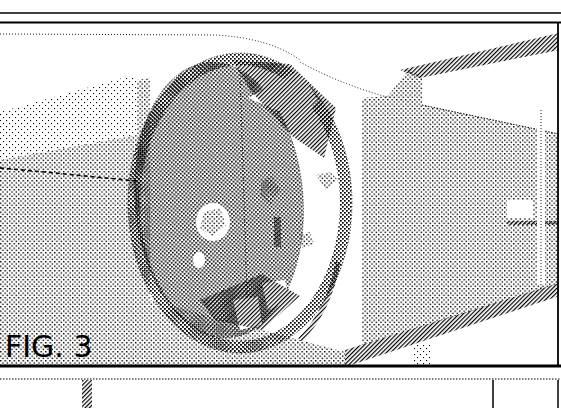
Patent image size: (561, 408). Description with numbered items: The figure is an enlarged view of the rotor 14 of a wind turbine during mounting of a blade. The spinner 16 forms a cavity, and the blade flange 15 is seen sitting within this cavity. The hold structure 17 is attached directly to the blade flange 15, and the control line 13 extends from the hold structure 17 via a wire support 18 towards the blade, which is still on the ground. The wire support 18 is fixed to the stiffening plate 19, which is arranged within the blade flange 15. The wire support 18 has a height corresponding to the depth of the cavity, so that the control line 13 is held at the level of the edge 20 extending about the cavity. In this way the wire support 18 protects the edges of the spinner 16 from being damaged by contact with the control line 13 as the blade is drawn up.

The control line 13 is at (270, 345).
The rotor 14 is at (328, 71).
The blade flange 15 is at (307, 195).
The spinner 16 is at (68, 98).
The hold structure 17 is at (230, 85).
The wire support 18 is at (257, 281).
The stiffening plate 19 is at (183, 190).
The edge 20 is at (147, 263).